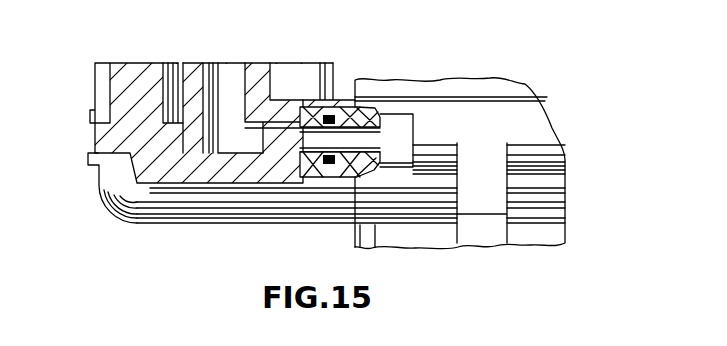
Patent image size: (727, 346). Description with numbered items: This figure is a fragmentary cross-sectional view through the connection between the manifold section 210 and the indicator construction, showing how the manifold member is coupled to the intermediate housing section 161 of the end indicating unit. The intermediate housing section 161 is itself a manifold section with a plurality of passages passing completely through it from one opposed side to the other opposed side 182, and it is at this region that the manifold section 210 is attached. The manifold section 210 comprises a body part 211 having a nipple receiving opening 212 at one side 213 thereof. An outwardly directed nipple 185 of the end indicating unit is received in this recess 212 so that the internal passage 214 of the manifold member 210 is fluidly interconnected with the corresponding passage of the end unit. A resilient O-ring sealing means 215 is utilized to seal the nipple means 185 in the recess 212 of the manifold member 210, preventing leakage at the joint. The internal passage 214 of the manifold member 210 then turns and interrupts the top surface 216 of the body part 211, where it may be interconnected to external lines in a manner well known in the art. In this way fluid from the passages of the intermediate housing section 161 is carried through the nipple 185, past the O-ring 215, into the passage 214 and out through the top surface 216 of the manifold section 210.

The manifold section 210 is at (127, 62).
The top surface 216 is at (209, 31).
The internal passages 214 is at (283, 122).
The nipple receiving openings 212 is at (343, 112).
The opposed side 182 is at (357, 80).
The intermediate housing section 161 is at (562, 120).
The body part 211 is at (139, 178).
The nipples 185 is at (305, 164).
The resilient O-ring sealing means 215 is at (330, 165).
The side 213 is at (357, 197).